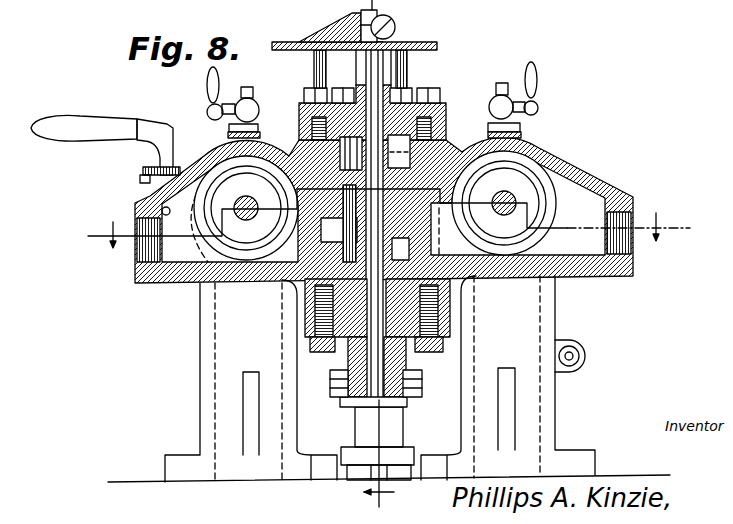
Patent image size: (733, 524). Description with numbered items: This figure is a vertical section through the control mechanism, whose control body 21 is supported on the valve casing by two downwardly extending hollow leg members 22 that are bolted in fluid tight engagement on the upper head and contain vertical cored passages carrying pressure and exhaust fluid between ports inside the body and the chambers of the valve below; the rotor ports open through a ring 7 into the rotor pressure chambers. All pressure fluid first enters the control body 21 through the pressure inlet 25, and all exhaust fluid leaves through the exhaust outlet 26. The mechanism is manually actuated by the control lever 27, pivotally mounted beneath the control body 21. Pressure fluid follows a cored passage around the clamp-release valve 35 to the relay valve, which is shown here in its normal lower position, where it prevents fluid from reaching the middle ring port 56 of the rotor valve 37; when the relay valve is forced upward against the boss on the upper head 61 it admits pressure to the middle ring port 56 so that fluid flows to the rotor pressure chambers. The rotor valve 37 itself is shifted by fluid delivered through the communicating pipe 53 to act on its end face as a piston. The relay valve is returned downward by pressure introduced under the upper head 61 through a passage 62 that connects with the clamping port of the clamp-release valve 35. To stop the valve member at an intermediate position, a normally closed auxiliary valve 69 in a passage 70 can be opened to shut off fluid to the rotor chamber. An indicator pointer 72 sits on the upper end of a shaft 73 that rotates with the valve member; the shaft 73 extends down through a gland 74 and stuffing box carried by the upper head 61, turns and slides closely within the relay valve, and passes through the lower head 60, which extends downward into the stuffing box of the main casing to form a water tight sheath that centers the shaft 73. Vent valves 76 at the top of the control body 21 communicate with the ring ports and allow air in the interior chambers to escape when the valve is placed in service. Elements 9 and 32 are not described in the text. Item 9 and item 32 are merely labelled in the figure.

The ring 7 is at (383, 220).
The section line 9-9 / axis 9 is at (379, 462).
The control body 21 is at (596, 175).
The hollow leg members 22 is at (200, 372).
The pressure inlet 25 is at (140, 246).
The exhaust outlet 26 is at (633, 246).
The control lever 27 is at (345, 405).
The bearing spacer 32 is at (365, 217).
The clamp-release valve 35 is at (250, 219).
The rotor valve 37 is at (500, 216).
The communicating pipe 53 is at (573, 347).
The middle ring port 56 is at (518, 204).
The lower head 60 is at (406, 372).
The upper head 61 is at (447, 113).
The passage 62 is at (338, 164).
The auxiliary valve 69 is at (132, 141).
The passage 70 is at (141, 200).
The indicator pointer 72 is at (354, 30).
The shaft 73 is at (371, 62).
The gland 74 is at (365, 84).
The vent valves 76 is at (250, 111).